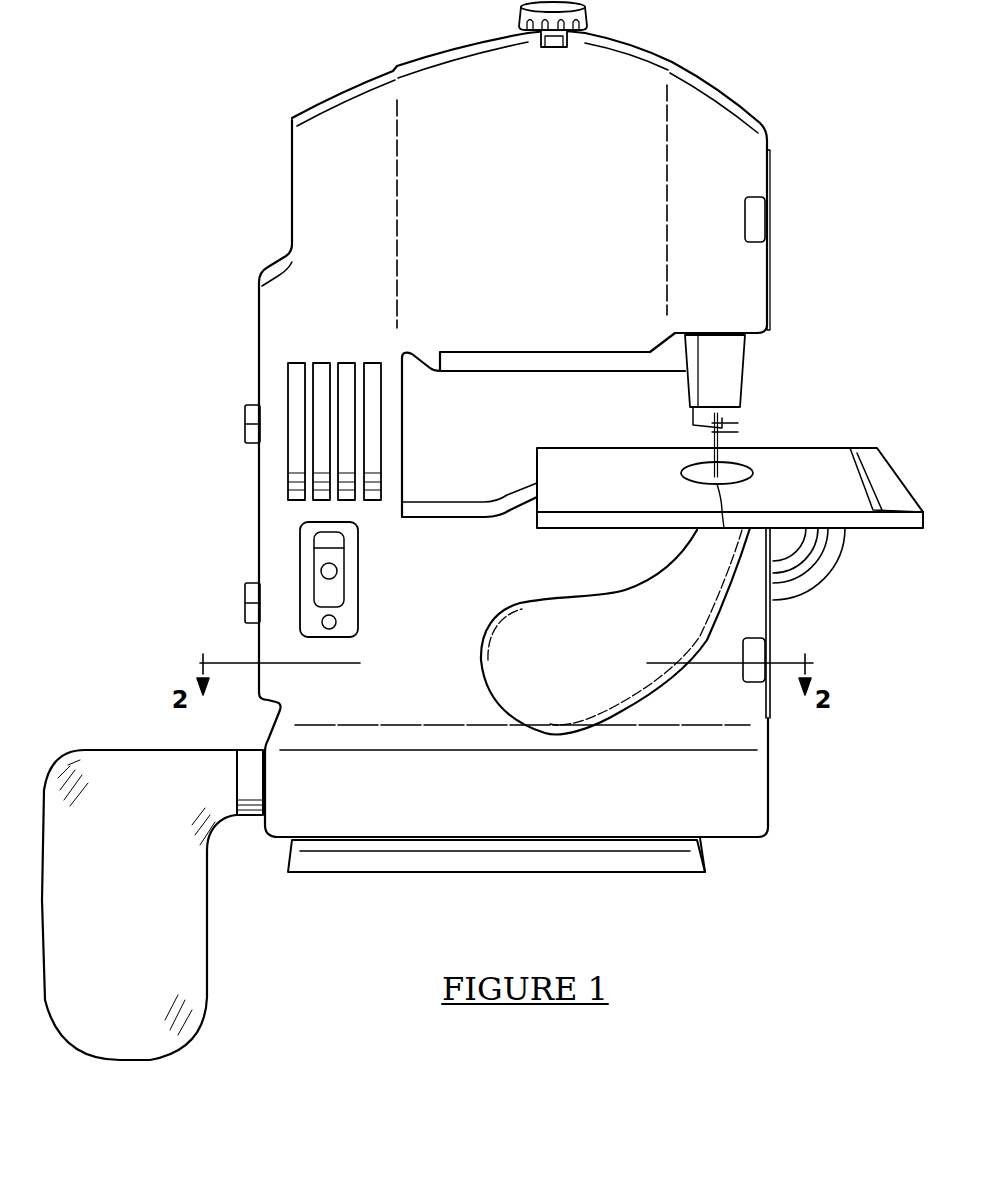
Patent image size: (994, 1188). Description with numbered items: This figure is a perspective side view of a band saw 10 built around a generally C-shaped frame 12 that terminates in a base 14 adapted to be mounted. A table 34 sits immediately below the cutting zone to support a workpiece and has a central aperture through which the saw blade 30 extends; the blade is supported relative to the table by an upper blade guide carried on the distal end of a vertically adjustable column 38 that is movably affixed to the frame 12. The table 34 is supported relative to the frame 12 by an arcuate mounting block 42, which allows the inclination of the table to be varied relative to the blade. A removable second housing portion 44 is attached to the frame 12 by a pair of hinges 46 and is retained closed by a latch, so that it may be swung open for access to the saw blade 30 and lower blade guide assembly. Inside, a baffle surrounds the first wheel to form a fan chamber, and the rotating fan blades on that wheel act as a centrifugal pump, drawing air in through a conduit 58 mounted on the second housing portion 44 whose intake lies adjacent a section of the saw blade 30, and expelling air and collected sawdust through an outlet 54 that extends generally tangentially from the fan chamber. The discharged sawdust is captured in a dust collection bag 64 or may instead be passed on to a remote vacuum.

The band saw 10 is at (712, 40).
The frame 12 is at (716, 858).
The base 14 is at (563, 863).
The saw blade 30 is at (760, 448).
The table 34 is at (885, 476).
The vertically adjustable column 38 is at (745, 370).
The arcuate mounting block 42 is at (807, 578).
The second housing portion 44 is at (723, 772).
The hinges 46 is at (243, 422).
The outlet 54 is at (247, 818).
The conduit 58 is at (542, 670).
The dust collection bag 64 is at (192, 965).